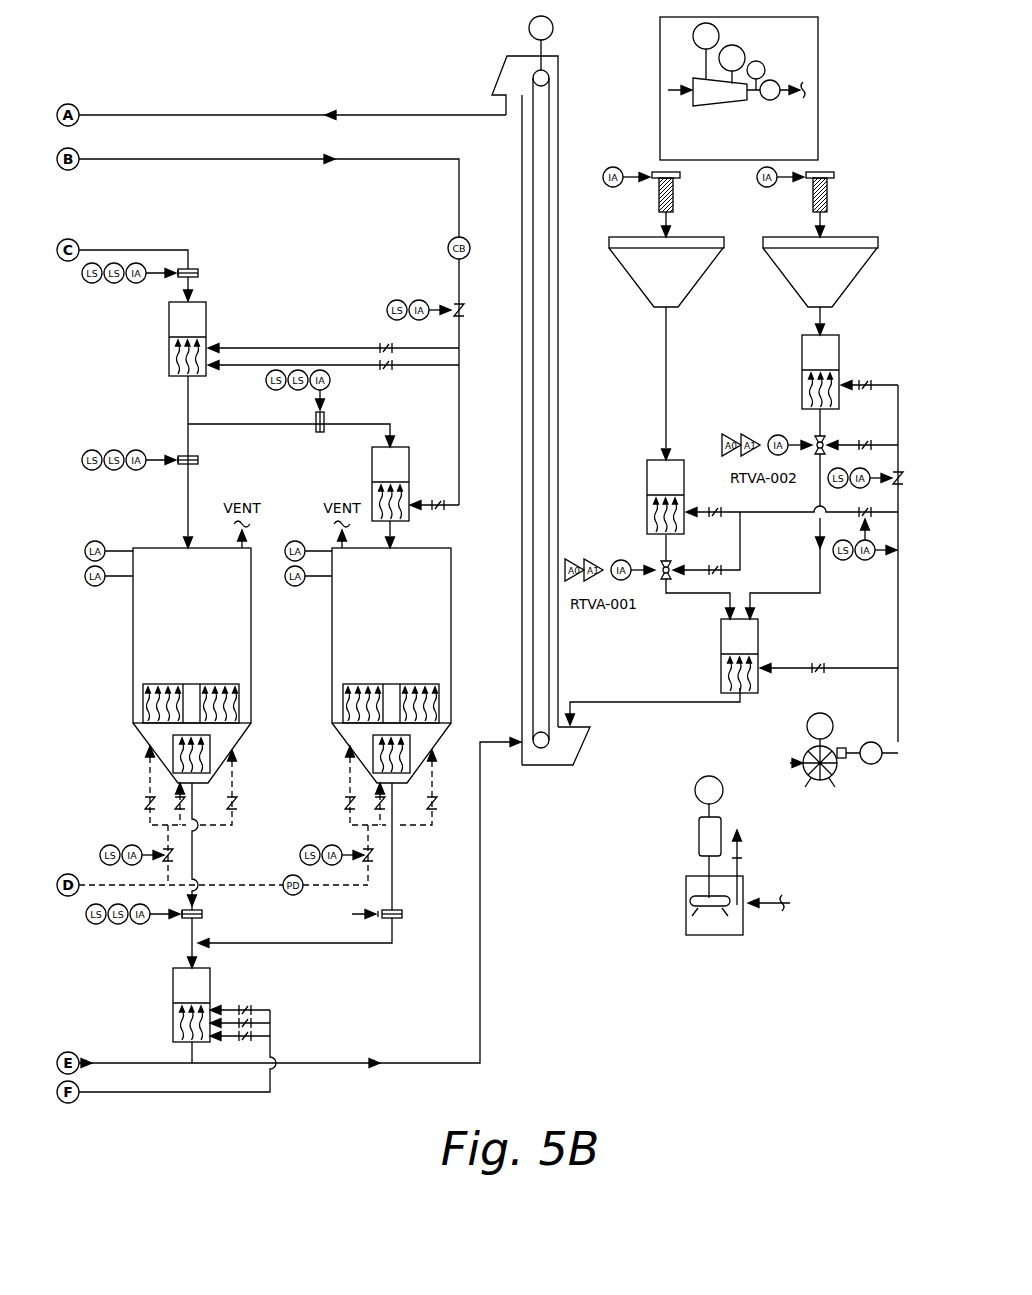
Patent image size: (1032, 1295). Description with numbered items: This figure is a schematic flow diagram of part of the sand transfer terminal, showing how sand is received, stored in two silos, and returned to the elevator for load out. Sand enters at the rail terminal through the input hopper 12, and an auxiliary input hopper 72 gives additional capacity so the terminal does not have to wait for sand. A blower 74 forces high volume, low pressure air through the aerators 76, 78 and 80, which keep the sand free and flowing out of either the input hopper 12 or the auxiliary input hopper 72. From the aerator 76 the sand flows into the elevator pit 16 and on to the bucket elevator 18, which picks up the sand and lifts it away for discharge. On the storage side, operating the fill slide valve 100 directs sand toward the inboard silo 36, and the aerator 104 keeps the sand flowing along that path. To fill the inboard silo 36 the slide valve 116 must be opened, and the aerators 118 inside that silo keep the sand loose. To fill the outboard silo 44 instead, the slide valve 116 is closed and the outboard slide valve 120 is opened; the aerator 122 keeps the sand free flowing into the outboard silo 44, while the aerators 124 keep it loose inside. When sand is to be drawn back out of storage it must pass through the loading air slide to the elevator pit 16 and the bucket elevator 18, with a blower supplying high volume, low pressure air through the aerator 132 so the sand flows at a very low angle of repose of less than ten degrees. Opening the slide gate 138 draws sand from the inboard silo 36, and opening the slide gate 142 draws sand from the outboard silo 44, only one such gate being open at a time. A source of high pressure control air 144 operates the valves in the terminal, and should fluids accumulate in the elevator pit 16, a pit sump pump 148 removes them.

The input hopper 12 is at (655, 289).
The elevator pit 16 is at (580, 748).
The bucket elevator 18 is at (553, 446).
The inboard silo 36 is at (181, 627).
The outboard silo 44 is at (381, 627).
The auxiliary input hopper 72 is at (809, 289).
The blower 74 is at (808, 756).
The aerator 76 is at (759, 644).
The aerator 78 is at (685, 483).
The aerator 80 is at (840, 366).
The fill slide valve 100 is at (198, 272).
The aerator 104 is at (169, 356).
The slide valve 116 is at (178, 456).
The aerators 118 is at (185, 684).
The outboard slide valve 120 is at (320, 437).
The aerator 122 is at (409, 468).
The aerators 124 is at (385, 684).
The aerator 132 is at (210, 1003).
The slide gate 138 is at (200, 919).
The slide gate 142 is at (403, 916).
The source of high pressure control air 144 is at (819, 108).
The pit sump pump 148 is at (686, 895).